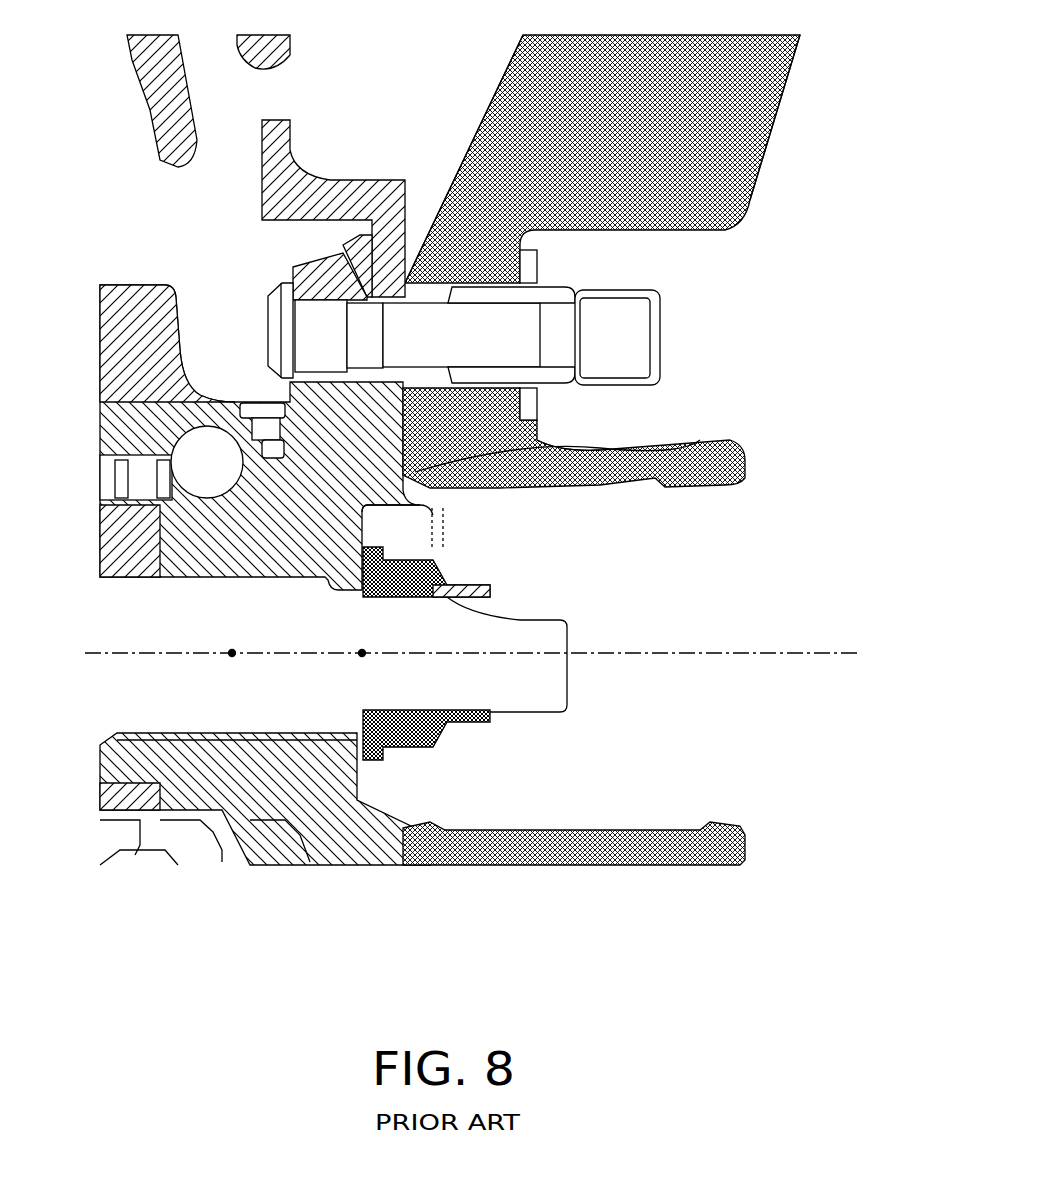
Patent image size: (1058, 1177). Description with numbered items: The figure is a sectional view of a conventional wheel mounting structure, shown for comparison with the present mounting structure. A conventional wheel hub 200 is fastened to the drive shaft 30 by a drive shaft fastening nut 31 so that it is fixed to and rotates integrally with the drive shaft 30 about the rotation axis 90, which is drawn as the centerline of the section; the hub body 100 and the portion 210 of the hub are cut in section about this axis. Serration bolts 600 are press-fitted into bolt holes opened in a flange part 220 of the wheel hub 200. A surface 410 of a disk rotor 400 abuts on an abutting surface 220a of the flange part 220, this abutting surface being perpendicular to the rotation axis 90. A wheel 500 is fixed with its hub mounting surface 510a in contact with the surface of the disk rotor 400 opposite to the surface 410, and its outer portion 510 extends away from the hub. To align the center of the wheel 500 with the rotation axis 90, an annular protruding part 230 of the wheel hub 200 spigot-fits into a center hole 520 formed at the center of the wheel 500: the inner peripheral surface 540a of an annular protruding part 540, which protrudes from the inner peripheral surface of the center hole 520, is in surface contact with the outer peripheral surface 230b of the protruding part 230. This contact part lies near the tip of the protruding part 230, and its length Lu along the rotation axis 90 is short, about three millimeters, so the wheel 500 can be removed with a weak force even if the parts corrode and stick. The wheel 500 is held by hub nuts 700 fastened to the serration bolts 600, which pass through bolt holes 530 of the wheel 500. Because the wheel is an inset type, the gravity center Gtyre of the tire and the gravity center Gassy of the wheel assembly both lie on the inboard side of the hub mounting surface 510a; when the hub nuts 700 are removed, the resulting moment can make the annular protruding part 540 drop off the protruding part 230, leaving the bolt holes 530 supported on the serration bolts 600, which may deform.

The drive shaft 30 is at (130, 612).
The drive shaft fastening nut 31 is at (440, 585).
The rotation axis 90 is at (97, 655).
The wheel hub 100 is at (65, 408).
The wheel hub 200 is at (525, 548).
The hub body 210 is at (120, 555).
The flange part 220 is at (300, 272).
The abutting surface 220a is at (275, 386).
The annular protruding part 230 is at (432, 535).
The outer peripheral surface 230b is at (565, 450).
The disk rotor 400 is at (368, 180).
The surface 410 is at (348, 250).
The wheel 500 is at (452, 98).
The carrier arm 510 is at (713, 215).
The hub mounting surface 510a is at (528, 415).
The center hole 520 is at (573, 610).
The bolt holes 530 is at (420, 290).
The annular protruding part 540 is at (580, 450).
The inner peripheral surface 540a is at (450, 478).
The serration bolts 600 is at (272, 316).
The hub nuts 700 is at (545, 292).
The length of the surface contact part Lu is at (443, 536).
The gravity center of the tire Gtyre is at (228, 658).
The gravity center of the wheel assembly Gassy is at (366, 658).